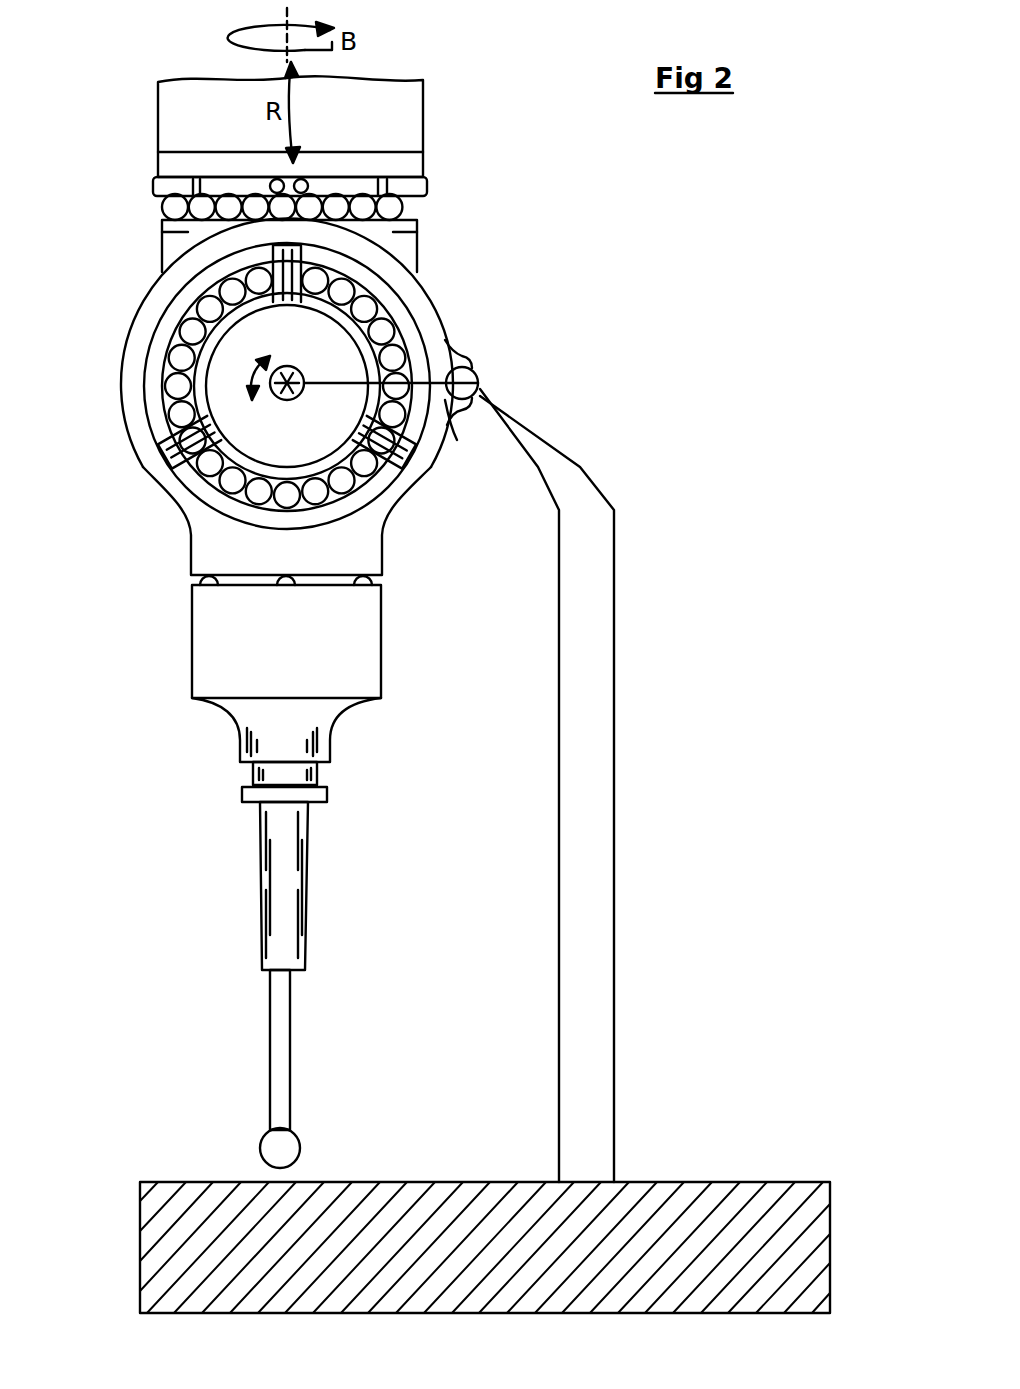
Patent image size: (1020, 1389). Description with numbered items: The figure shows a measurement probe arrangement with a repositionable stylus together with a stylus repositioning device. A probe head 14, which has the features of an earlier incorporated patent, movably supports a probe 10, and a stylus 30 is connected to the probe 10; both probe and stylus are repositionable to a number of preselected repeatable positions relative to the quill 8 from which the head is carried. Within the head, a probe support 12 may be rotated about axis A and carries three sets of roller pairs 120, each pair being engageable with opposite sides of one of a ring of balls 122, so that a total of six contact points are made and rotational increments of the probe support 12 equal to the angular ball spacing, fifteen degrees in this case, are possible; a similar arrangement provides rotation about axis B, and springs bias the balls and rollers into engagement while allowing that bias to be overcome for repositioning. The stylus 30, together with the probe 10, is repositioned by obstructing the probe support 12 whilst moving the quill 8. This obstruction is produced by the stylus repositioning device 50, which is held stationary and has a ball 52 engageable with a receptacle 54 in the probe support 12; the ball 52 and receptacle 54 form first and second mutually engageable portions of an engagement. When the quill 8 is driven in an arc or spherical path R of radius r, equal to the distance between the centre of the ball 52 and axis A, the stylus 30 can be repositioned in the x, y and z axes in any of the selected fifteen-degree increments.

The quill 8 is at (415, 118).
The probe 10 is at (232, 650).
The probe support 12 is at (212, 540).
The probe head 14 is at (497, 253).
The stylus 30 is at (274, 845).
The stylus repositioning device 50 is at (614, 870).
The ball 52 is at (478, 372).
The receptacle 54 is at (463, 408).
The roller pairs 120 is at (158, 182).
The ring of balls 122 is at (183, 208).